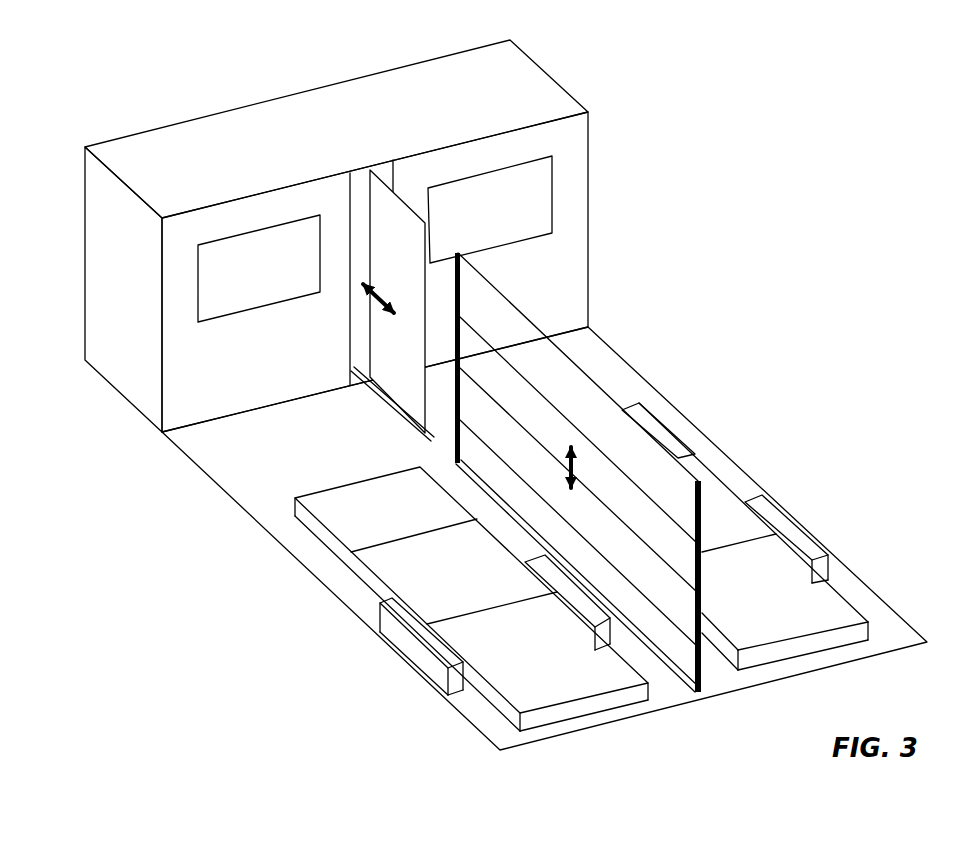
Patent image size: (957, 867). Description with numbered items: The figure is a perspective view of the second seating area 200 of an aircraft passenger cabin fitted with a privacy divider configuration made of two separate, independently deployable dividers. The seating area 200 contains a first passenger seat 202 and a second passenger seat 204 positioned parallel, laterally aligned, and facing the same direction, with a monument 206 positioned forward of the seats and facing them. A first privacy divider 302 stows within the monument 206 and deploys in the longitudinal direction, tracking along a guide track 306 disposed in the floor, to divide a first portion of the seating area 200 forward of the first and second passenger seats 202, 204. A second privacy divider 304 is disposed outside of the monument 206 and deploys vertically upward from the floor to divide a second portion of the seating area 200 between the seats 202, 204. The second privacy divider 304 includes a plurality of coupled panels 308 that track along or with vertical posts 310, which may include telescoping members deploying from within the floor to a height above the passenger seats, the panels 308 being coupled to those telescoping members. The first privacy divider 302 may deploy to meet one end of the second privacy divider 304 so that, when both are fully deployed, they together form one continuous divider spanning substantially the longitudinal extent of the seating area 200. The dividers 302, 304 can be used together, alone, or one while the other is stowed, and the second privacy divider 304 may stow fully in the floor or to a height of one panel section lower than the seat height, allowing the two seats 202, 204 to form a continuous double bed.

The second seating area 200 is at (653, 357).
The first passenger seat 202 is at (462, 642).
The second passenger seat 204 is at (787, 578).
The monument 206 is at (510, 87).
The first privacy divider 302 is at (400, 188).
The second privacy divider 304 is at (573, 353).
The guide track 306 is at (388, 410).
The coupled panels 308 is at (530, 402).
The vertical posts 310 is at (460, 300).